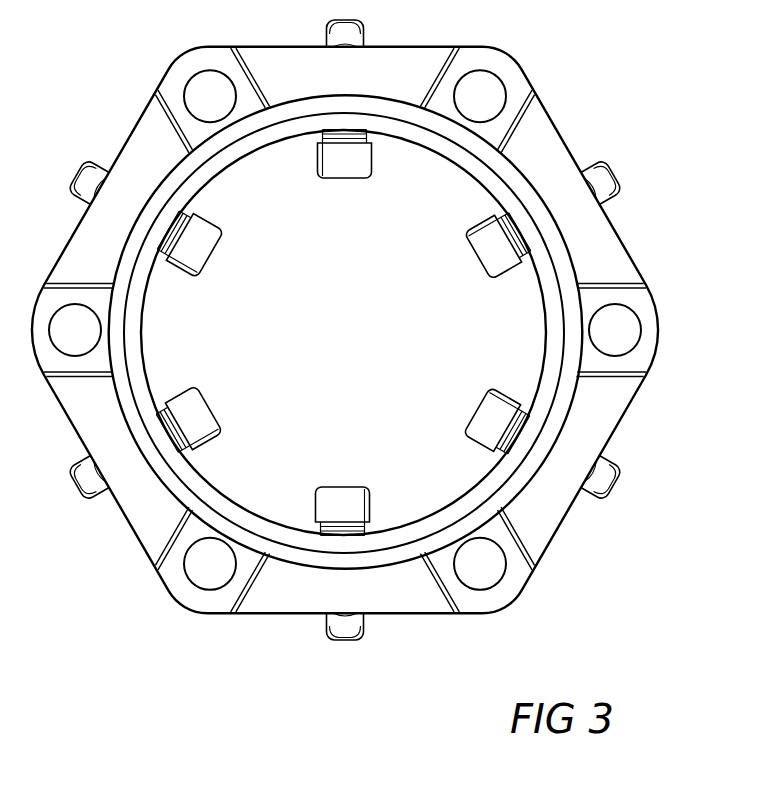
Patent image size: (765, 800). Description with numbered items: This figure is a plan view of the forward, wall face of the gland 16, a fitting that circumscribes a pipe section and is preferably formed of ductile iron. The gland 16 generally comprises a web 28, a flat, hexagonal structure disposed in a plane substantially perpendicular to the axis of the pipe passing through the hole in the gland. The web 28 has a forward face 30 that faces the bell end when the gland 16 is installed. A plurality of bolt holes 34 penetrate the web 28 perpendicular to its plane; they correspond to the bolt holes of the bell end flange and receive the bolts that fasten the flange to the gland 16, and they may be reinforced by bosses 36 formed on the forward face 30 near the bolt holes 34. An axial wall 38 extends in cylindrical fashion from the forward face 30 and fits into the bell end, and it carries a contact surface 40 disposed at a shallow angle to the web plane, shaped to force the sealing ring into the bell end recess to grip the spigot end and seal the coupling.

The gland 16 is at (562, 140).
The web 28 is at (560, 177).
The forward face 30 is at (588, 248).
The bolt holes 34 is at (613, 337).
The mounting pads 36 is at (632, 303).
The axial wall 38 is at (552, 387).
The contact surface 40 is at (517, 485).